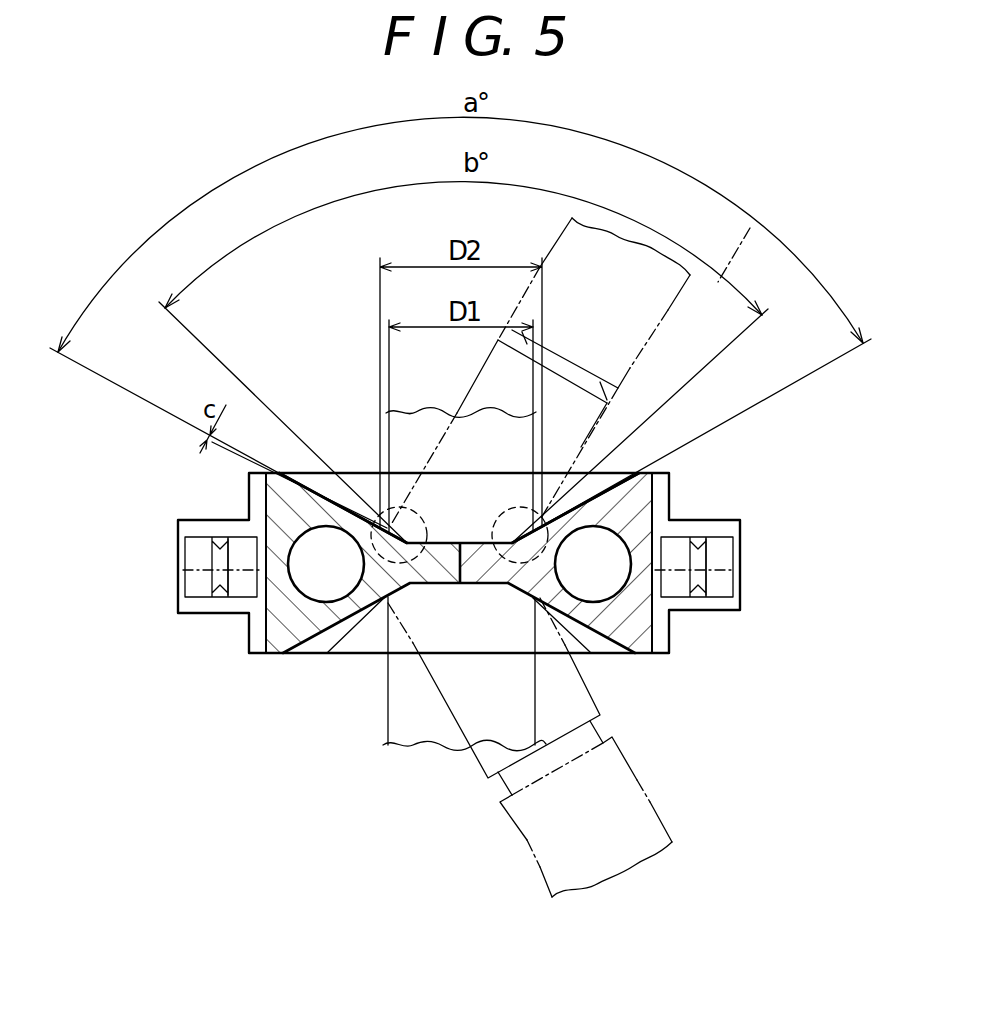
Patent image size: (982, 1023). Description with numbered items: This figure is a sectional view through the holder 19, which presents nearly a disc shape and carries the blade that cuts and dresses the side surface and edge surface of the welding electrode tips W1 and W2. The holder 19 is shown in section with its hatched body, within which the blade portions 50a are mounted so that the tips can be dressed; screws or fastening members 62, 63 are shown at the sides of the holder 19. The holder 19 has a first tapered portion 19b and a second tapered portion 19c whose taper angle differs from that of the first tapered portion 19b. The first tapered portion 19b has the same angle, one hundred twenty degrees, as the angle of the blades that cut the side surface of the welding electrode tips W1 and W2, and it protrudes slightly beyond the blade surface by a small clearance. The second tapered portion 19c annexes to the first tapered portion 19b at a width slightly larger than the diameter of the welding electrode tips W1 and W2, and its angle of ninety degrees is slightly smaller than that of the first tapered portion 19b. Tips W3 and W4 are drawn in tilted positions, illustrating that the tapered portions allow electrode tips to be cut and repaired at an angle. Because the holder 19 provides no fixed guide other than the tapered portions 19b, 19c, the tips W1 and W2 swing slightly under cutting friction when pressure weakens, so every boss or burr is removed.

The holder 19 is at (197, 520).
The first tapered portion 19b is at (605, 475).
The second tapered portion 19c is at (523, 512).
The support block with rollers 50a is at (283, 633).
The adjusting screw 62 is at (240, 585).
The lock nut 63 is at (193, 570).
The welding electrode tip W1 is at (422, 420).
The welding electrode tip W2 is at (415, 730).
The workpiece W3 is at (750, 228).
The workpiece W4 is at (650, 833).